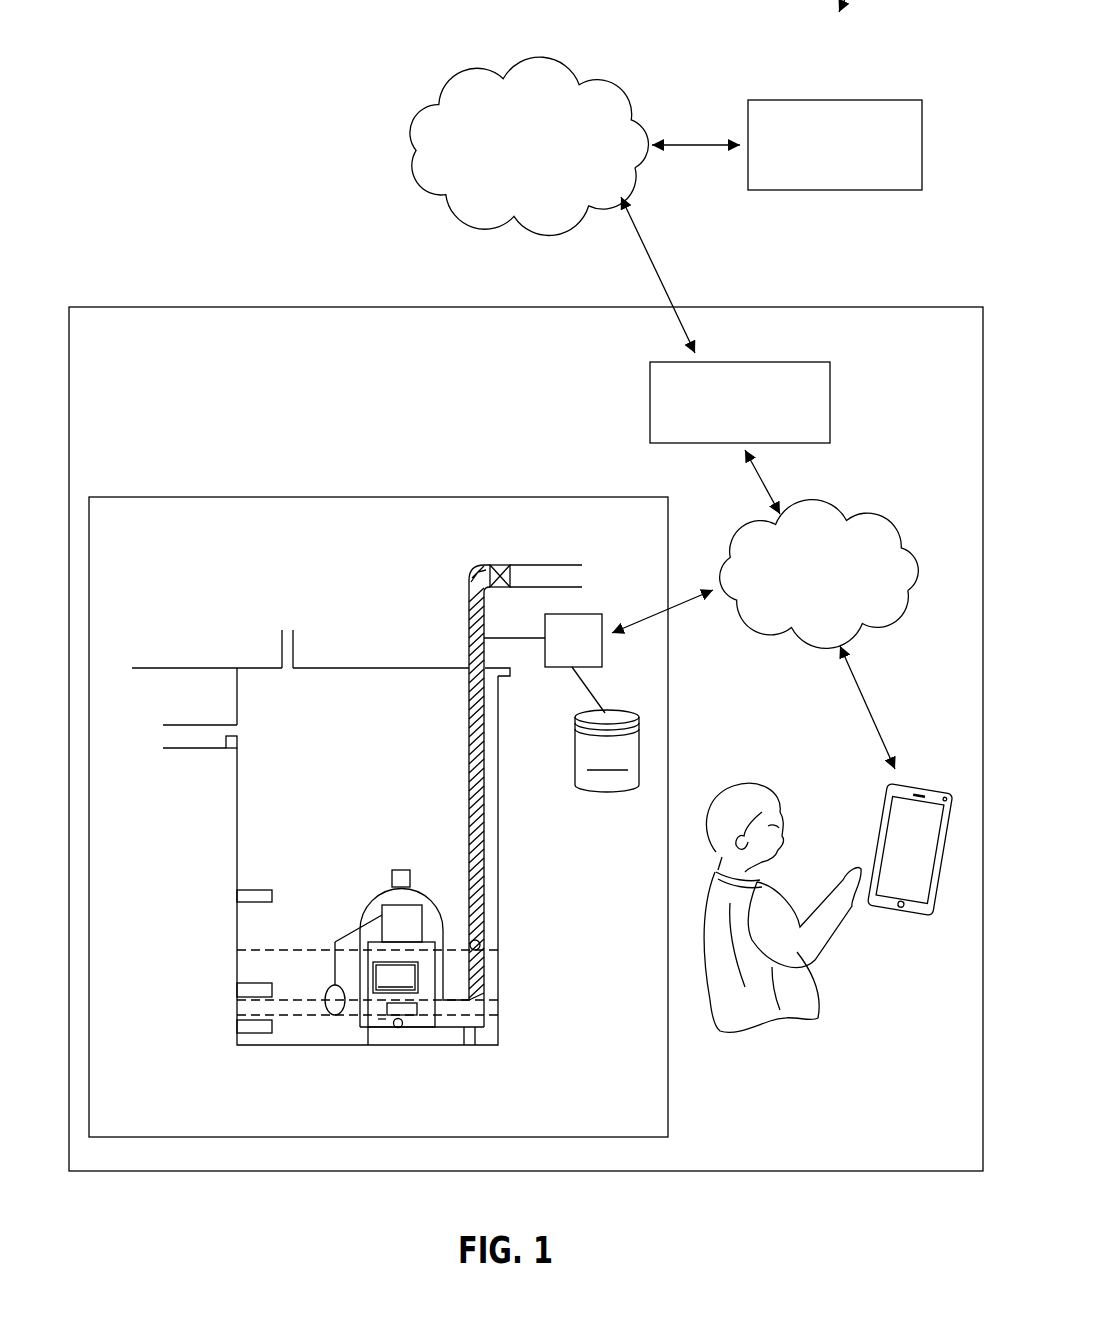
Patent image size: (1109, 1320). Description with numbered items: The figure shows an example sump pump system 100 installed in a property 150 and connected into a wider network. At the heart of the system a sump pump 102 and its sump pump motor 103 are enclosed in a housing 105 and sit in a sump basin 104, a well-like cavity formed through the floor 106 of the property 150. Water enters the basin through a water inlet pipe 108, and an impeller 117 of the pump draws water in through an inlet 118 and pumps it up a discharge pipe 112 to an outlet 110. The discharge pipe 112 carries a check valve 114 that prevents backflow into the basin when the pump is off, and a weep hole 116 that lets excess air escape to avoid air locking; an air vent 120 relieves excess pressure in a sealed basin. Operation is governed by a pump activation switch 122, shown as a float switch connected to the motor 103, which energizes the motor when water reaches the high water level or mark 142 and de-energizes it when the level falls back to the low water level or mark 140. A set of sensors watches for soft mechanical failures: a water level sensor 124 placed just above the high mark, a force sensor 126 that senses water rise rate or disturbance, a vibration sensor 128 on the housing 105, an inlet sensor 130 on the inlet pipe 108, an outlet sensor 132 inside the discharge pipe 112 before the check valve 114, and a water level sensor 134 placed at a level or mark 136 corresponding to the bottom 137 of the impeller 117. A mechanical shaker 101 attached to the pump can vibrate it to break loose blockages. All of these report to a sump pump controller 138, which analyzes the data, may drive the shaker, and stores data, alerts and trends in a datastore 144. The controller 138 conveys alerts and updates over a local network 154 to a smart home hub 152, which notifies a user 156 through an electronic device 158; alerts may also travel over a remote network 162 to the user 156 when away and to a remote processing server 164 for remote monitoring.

The sump pump system 100 is at (336, 497).
The mechanical shaker 101 is at (395, 977).
The sump pump 102 is at (425, 987).
The sump pump motor 103 is at (381, 911).
The sump basin 104 is at (352, 772).
The housing 105 is at (445, 912).
The floor 106 is at (162, 668).
The water inlet pipe 108 is at (190, 738).
The outlet 110 is at (568, 580).
The discharge pipe 112 is at (478, 750).
The check valve 114 is at (512, 565).
The weep hole 116 is at (481, 945).
The impeller 117 is at (414, 1014).
The inlet 118 is at (399, 1028).
The air vent 120 is at (281, 645).
The pump activation switch 122 is at (333, 1016).
The water level sensor 124 is at (252, 896).
The force sensor 126 is at (250, 990).
The vibration sensor 128 is at (401, 880).
The inlet sensor 130 is at (229, 750).
The outlet sensor 132 is at (481, 572).
The water level sensor 134 is at (248, 1034).
The level or mark 136 is at (262, 1013).
The bottom of the impeller 137 is at (386, 1021).
The sump pump controller 138 is at (588, 652).
The low water level or mark 140 is at (294, 998).
The high water level or mark 142 is at (263, 950).
The datastore 144 is at (607, 751).
The property 150 is at (867, 307).
The smart home hub 152 is at (831, 396).
The local network 154 is at (868, 521).
The user 156 is at (793, 1027).
The electronic device 158 is at (929, 789).
The remote network 162 is at (554, 72).
The remote processing server 164 is at (923, 130).